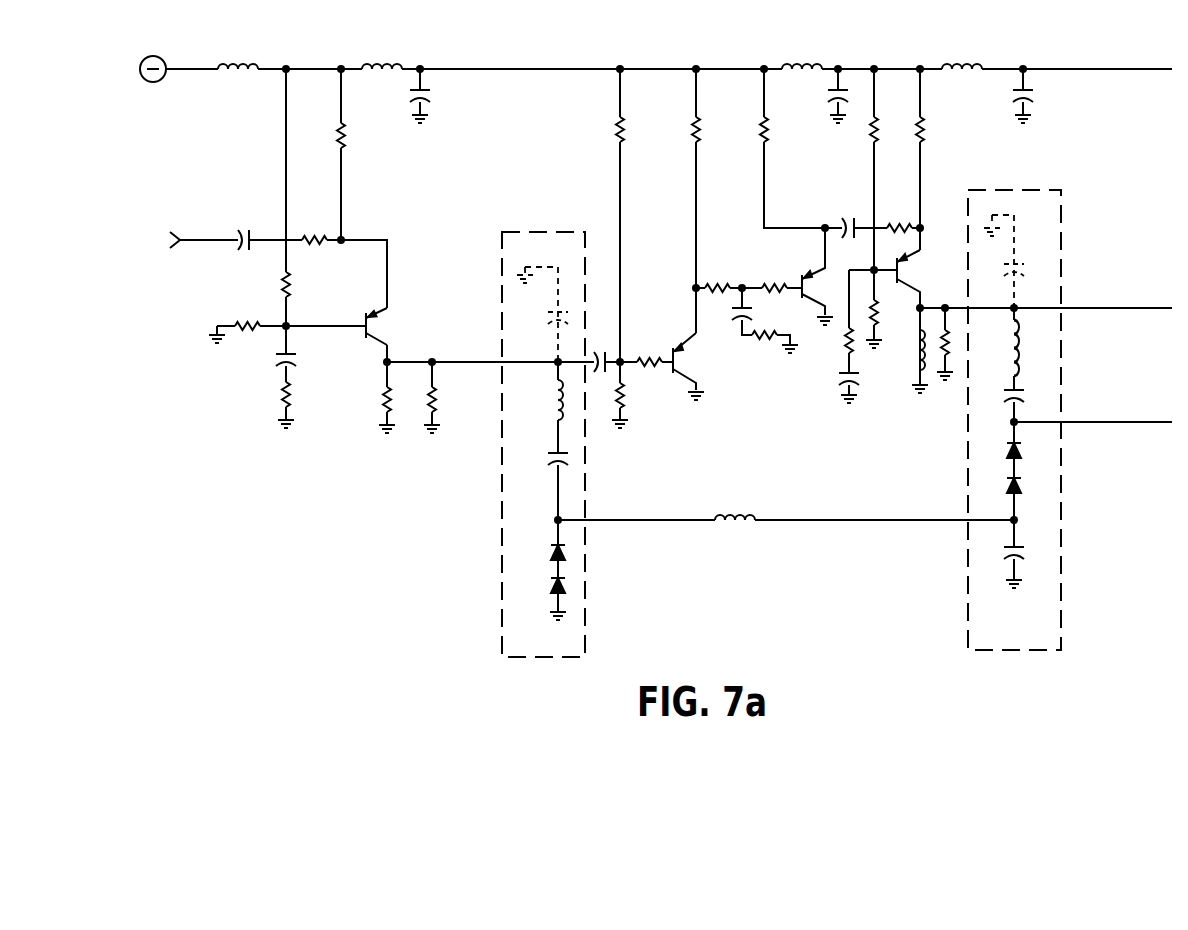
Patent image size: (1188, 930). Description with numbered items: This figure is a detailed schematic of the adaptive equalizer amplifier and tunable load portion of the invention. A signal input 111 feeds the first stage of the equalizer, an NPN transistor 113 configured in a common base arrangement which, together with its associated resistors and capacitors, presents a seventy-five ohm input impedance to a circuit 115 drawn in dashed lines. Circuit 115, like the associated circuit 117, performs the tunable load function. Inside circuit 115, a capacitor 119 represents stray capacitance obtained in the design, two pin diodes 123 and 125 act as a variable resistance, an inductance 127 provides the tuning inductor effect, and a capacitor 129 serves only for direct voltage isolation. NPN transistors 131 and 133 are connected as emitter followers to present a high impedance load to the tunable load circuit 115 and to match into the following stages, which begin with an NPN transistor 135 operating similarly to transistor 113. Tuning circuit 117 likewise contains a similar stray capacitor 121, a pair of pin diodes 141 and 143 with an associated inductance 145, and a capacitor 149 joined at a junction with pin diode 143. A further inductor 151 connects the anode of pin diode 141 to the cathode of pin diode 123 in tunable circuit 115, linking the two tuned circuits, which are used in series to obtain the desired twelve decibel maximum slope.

The signal input 111 is at (208, 240).
The NPN transistor 113 is at (395, 328).
The circuit 115 is at (502, 580).
The circuit 117 is at (1061, 565).
The capacitor 119 is at (552, 325).
The capacitor 121 is at (1020, 262).
The pin diode 123 is at (556, 548).
The pin diode 125 is at (556, 584).
The inductance 127 is at (556, 394).
The capacitor 129 is at (556, 452).
The NPN transistor 131 is at (706, 361).
The NPN transistor 133 is at (801, 267).
The NPN transistor 135 is at (926, 264).
The pin diode 141 is at (1035, 478).
The pin diode 143 is at (1035, 448).
The inductance 145 is at (1018, 358).
The capacitor 149 is at (1012, 386).
The inductor 151 is at (736, 515).